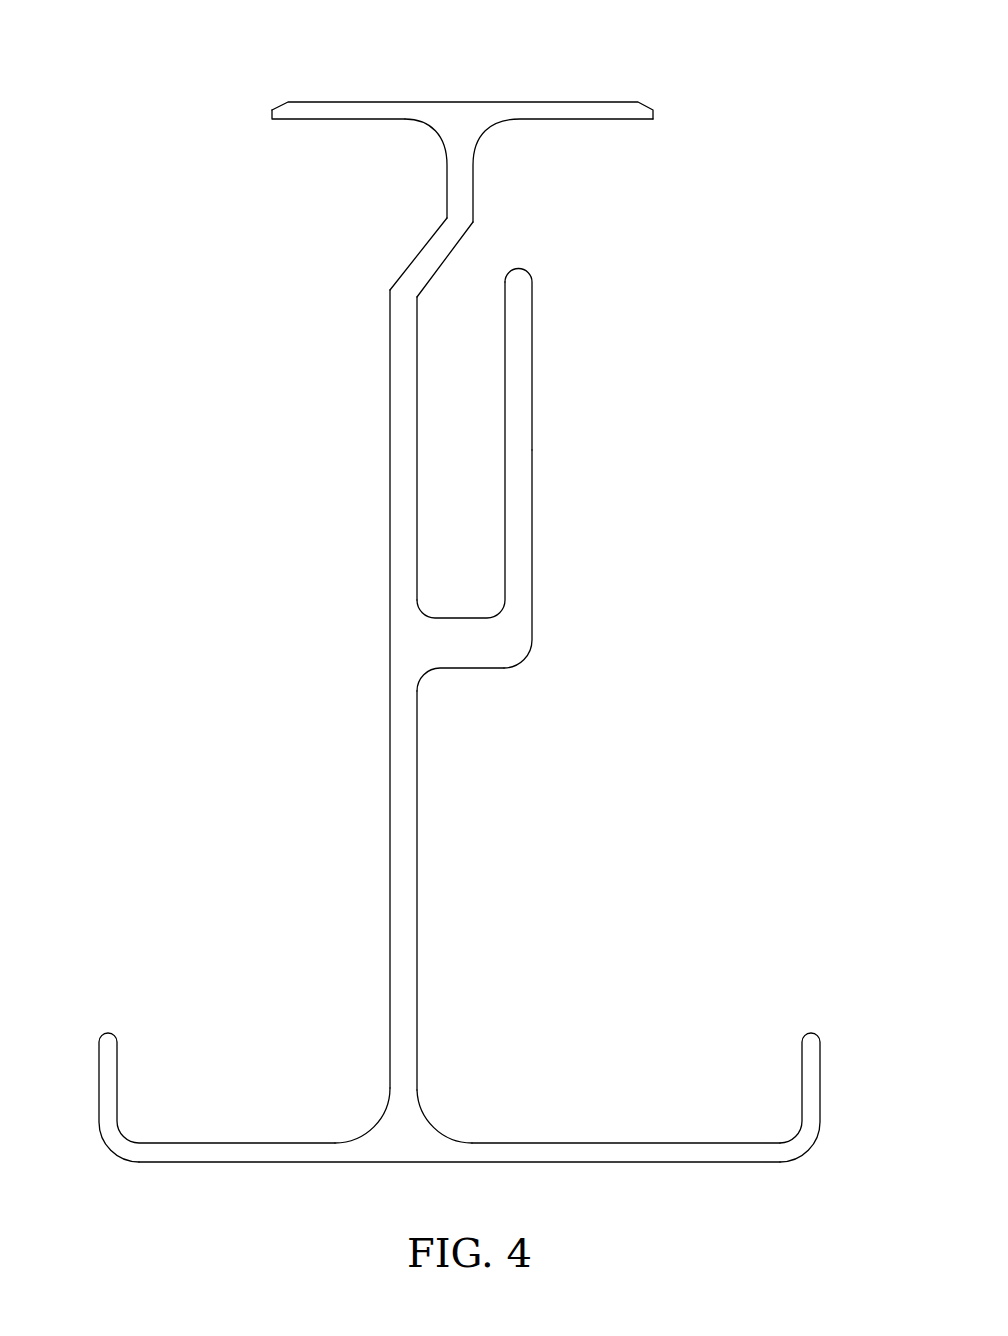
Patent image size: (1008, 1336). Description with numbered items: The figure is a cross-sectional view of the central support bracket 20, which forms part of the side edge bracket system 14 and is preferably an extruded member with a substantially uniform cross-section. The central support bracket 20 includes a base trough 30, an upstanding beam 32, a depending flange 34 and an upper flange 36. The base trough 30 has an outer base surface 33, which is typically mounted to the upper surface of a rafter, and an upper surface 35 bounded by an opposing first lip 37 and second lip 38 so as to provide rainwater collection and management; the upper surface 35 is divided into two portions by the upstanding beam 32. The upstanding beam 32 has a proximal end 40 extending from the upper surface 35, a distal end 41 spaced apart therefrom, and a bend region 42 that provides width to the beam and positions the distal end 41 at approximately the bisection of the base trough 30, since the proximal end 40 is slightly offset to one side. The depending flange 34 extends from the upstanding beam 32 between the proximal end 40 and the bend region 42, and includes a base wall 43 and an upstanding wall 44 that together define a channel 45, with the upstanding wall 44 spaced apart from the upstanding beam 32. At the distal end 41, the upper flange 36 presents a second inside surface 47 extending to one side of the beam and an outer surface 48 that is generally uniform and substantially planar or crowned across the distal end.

The side edge bracket system 14 is at (589, 425).
The central support bracket 20 is at (624, 247).
The base trough 30 is at (721, 1185).
The upstanding beam 32 is at (418, 933).
The outer base surface 33 is at (578, 1163).
The upper surface 35 is at (624, 1143).
The depending flange 34 is at (548, 565).
The upper flange 36 is at (611, 33).
The first lip 37 is at (99, 1083).
The second lip 38 is at (821, 1078).
The proximal end 40 is at (296, 132).
The distal end 41 is at (431, 152).
The bend region 42 is at (381, 276).
The base wall 43 is at (491, 669).
The upstanding wall 44 is at (534, 377).
The channel 45 is at (477, 349).
The second inside surface 47 is at (597, 120).
The outer surface 48 is at (416, 101).